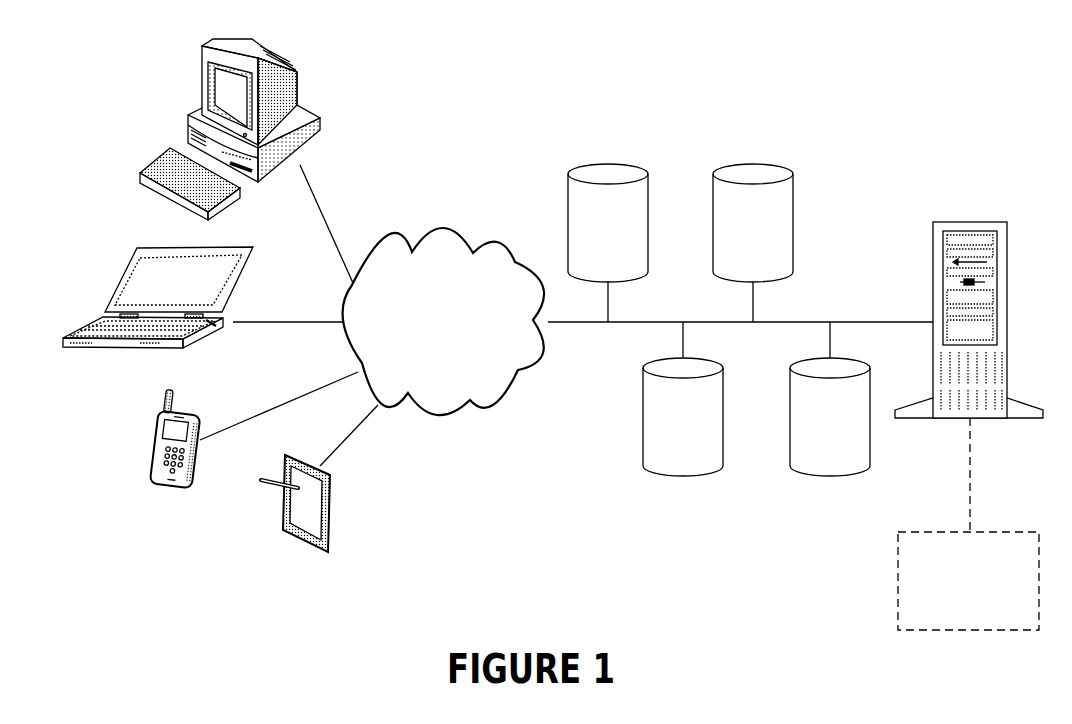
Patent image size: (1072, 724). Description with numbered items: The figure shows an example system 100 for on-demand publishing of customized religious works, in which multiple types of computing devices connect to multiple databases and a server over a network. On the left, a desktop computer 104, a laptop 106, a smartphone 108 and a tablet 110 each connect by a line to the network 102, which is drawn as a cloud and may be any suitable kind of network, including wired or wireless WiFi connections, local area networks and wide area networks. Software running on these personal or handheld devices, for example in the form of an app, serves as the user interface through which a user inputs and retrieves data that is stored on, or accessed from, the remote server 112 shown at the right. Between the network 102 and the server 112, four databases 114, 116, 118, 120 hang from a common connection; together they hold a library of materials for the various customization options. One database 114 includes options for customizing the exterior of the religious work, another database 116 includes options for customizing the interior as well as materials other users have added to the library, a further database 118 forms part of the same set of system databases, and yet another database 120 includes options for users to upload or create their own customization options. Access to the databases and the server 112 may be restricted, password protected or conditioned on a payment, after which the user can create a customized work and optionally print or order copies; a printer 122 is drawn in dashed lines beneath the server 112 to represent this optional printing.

The system 100 is at (814, 86).
The network 102 is at (429, 367).
The desktop computer 104 is at (208, 44).
The laptop 106 is at (107, 300).
The smartphone 108 is at (153, 432).
The tablet 110 is at (283, 516).
The server 112 is at (933, 216).
The database 114 is at (593, 239).
The database 116 is at (738, 239).
The database 118 is at (668, 427).
The database 120 is at (815, 427).
The printer 122 is at (898, 587).